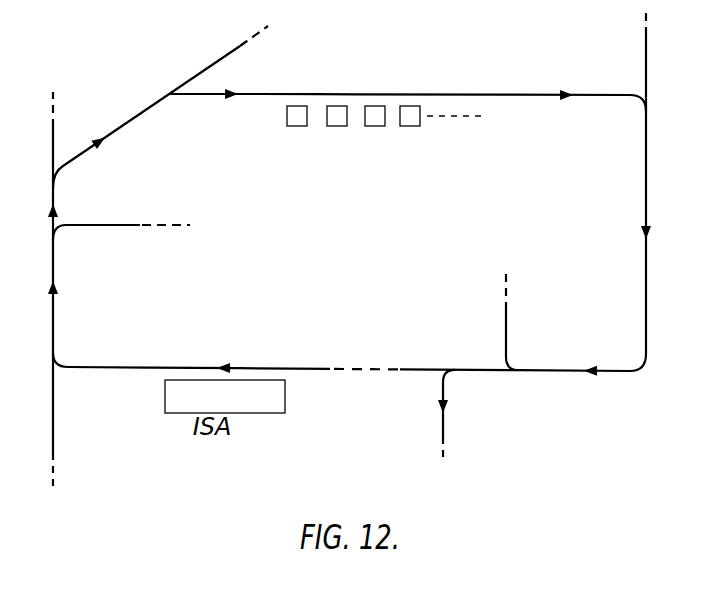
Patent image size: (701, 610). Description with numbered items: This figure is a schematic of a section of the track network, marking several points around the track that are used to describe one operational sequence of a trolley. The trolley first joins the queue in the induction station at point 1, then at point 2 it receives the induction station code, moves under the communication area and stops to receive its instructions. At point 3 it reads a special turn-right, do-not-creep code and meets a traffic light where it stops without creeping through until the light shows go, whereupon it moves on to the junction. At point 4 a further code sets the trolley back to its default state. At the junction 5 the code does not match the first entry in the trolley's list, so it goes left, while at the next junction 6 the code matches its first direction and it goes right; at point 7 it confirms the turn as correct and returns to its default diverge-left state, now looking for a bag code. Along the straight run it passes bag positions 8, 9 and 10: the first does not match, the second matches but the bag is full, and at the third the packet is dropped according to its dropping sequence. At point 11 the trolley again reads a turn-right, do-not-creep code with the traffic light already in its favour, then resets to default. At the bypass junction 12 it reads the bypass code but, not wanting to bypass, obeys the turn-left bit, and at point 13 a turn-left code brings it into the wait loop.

The induction station queue point 1 is at (285, 348).
The induction station code point 2 is at (195, 350).
The traffic light point 3 is at (101, 348).
The default state reset point 4 is at (37, 317).
The junction point 5 is at (103, 262).
The junction point 6 is at (37, 164).
The confirmation point 7 is at (160, 107).
The bag point 8 is at (288, 91).
The bag point 9 is at (337, 91).
The bag point 10 is at (428, 91).
The traffic light point 11 is at (575, 182).
The bypass junction 12 is at (576, 323).
The wait loop entry point 13 is at (424, 394).